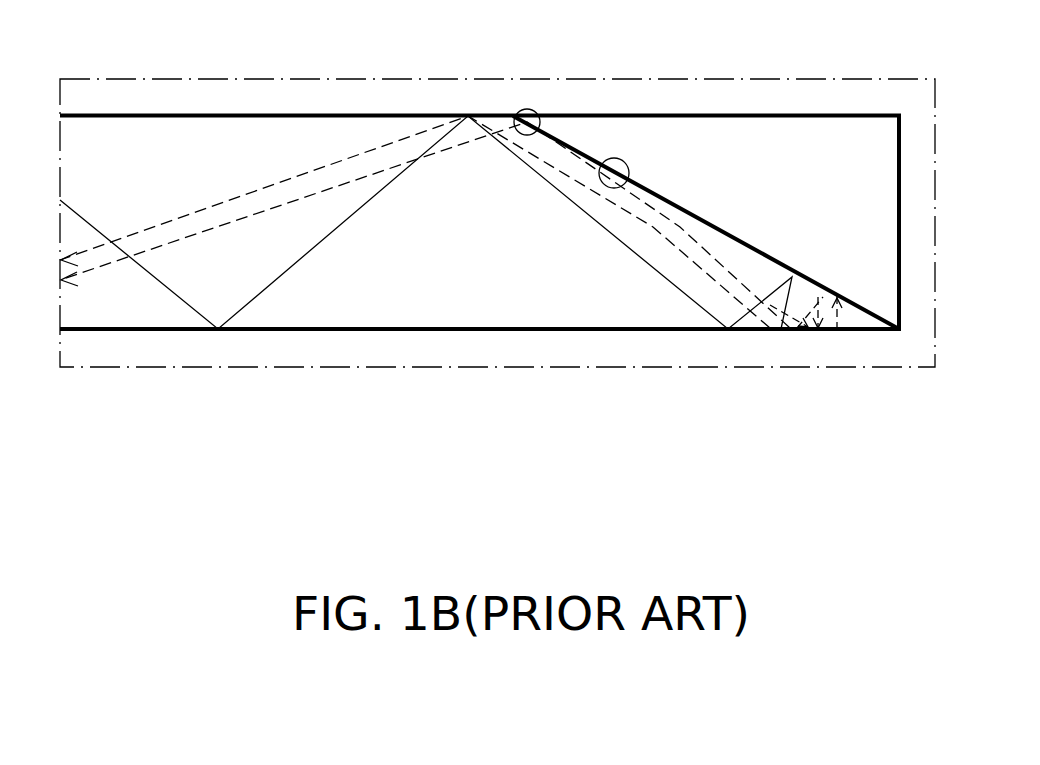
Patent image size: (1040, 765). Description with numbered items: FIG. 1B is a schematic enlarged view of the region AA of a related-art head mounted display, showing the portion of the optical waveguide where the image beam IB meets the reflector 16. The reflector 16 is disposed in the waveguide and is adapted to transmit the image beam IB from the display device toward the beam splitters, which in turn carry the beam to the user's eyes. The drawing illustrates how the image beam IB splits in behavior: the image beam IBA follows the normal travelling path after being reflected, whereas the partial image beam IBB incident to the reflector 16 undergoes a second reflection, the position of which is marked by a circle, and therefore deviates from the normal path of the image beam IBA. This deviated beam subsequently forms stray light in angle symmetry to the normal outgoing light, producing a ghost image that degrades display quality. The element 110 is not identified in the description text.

The light guide plate 110 is at (183, 142).
The region AA is at (790, 80).
The reflector 16 is at (760, 253).
The image beam IB is at (453, 306).
The image beam IBA is at (780, 333).
The partial image beam IBB is at (837, 333).